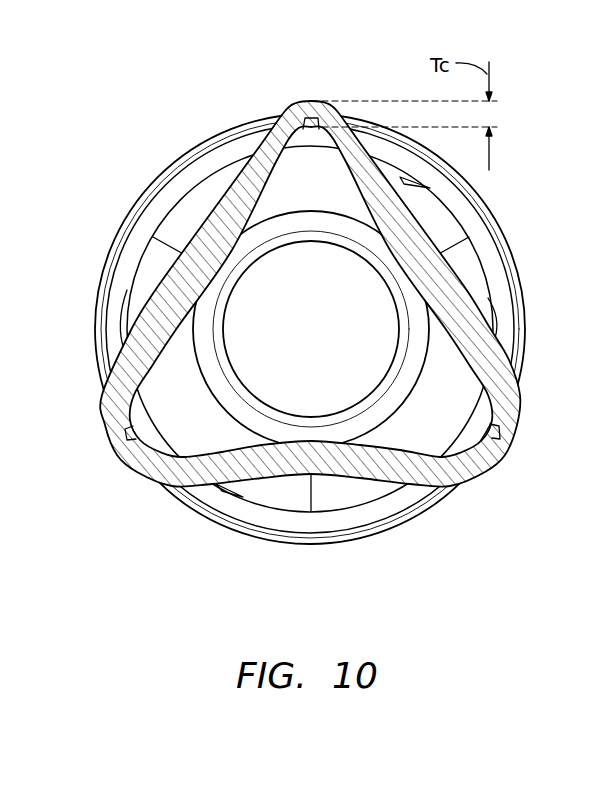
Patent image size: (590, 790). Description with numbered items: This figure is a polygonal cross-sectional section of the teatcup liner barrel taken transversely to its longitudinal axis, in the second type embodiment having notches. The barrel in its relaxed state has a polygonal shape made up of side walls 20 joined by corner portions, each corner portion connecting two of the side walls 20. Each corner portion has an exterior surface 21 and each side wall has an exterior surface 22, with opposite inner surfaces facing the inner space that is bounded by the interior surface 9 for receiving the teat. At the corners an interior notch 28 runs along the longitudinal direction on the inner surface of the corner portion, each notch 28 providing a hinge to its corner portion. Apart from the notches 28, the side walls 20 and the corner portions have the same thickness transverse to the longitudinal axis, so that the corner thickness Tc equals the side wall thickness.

The interior surface 9 is at (280, 286).
The side walls 20 is at (207, 221).
The exterior surface 21 is at (280, 279).
The exterior surface 22 is at (174, 270).
The interior notch 28 is at (305, 118).